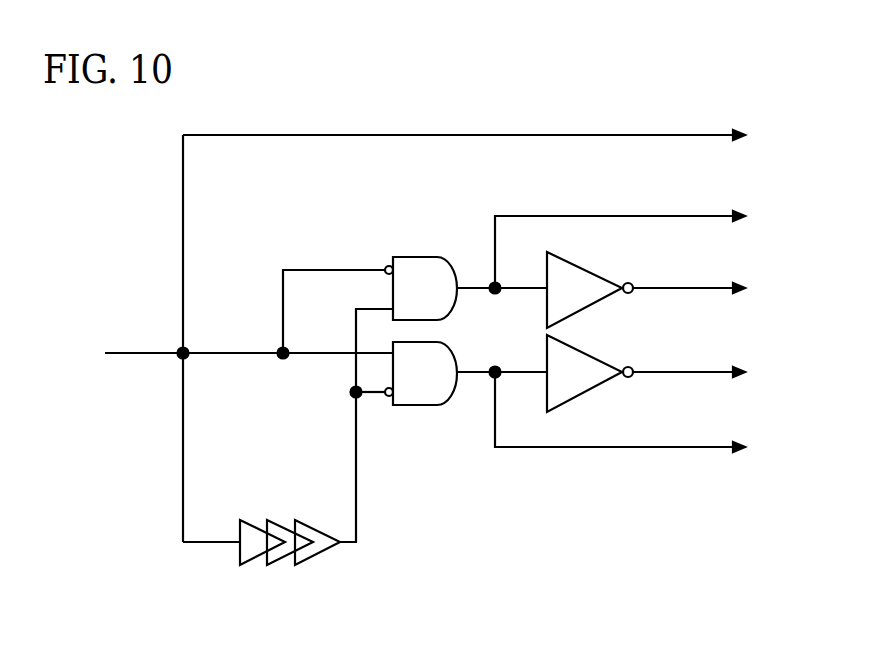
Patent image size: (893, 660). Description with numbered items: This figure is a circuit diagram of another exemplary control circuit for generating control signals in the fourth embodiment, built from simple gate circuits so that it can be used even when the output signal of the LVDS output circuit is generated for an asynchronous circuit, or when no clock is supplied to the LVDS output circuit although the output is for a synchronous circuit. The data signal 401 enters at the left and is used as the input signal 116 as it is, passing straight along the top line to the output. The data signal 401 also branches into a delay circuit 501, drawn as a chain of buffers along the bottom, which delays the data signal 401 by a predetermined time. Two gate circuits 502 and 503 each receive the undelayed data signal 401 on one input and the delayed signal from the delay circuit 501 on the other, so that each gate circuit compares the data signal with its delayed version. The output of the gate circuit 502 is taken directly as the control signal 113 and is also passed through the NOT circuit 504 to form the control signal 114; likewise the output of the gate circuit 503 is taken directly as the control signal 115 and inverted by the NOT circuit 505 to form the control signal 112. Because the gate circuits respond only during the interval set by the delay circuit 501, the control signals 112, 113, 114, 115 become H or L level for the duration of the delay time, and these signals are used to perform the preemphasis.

The data signal 401 is at (224, 338).
The delay circuit 501 is at (288, 457).
The gate circuit 502 is at (417, 255).
The gate circuit 503 is at (420, 406).
The NOT circuit 504 is at (588, 268).
The NOT circuit 505 is at (588, 351).
The control signal 112 is at (715, 371).
The control signal 113 is at (646, 243).
The control signal 114 is at (715, 287).
The control signal 115 is at (646, 418).
The input signal 116 is at (490, 134).